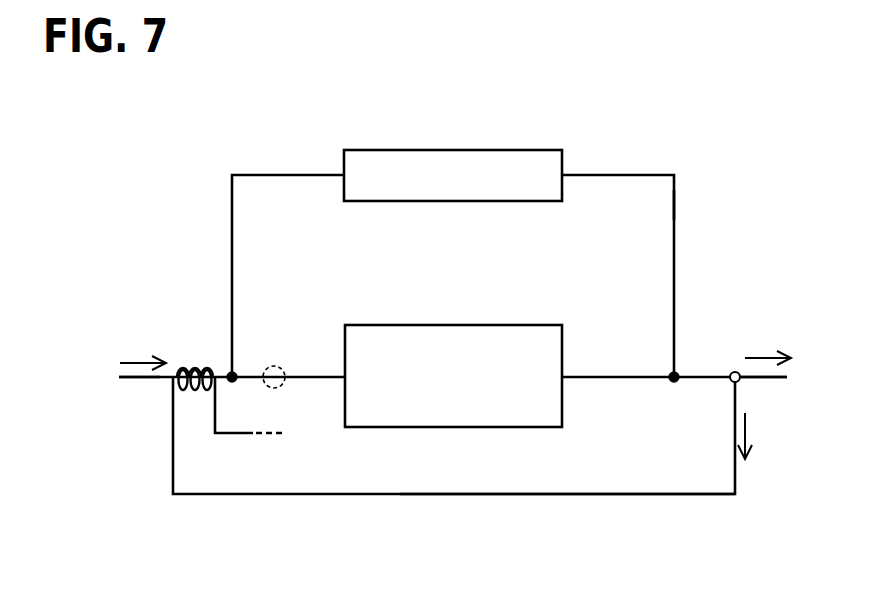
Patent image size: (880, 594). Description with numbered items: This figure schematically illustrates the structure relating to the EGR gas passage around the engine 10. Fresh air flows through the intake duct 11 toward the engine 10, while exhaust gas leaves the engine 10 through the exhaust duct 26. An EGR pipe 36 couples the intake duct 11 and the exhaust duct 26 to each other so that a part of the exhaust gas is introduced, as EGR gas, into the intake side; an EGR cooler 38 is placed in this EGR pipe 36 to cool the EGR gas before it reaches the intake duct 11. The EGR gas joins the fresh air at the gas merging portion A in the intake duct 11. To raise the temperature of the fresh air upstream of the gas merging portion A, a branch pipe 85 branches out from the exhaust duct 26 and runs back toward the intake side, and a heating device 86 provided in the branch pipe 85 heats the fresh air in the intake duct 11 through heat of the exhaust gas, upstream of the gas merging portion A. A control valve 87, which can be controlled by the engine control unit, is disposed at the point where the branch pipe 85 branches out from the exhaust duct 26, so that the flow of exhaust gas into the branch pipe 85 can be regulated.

The engine 10 is at (539, 325).
The intake duct 11 is at (133, 380).
The exhaust duct 26 is at (777, 380).
The EGR pipe 36 is at (676, 203).
The EGR cooler 38 is at (539, 150).
The branch pipe 85 is at (690, 496).
The heating device 86 is at (205, 367).
The control valve 87 is at (731, 380).
The gas merging portion A is at (297, 361).